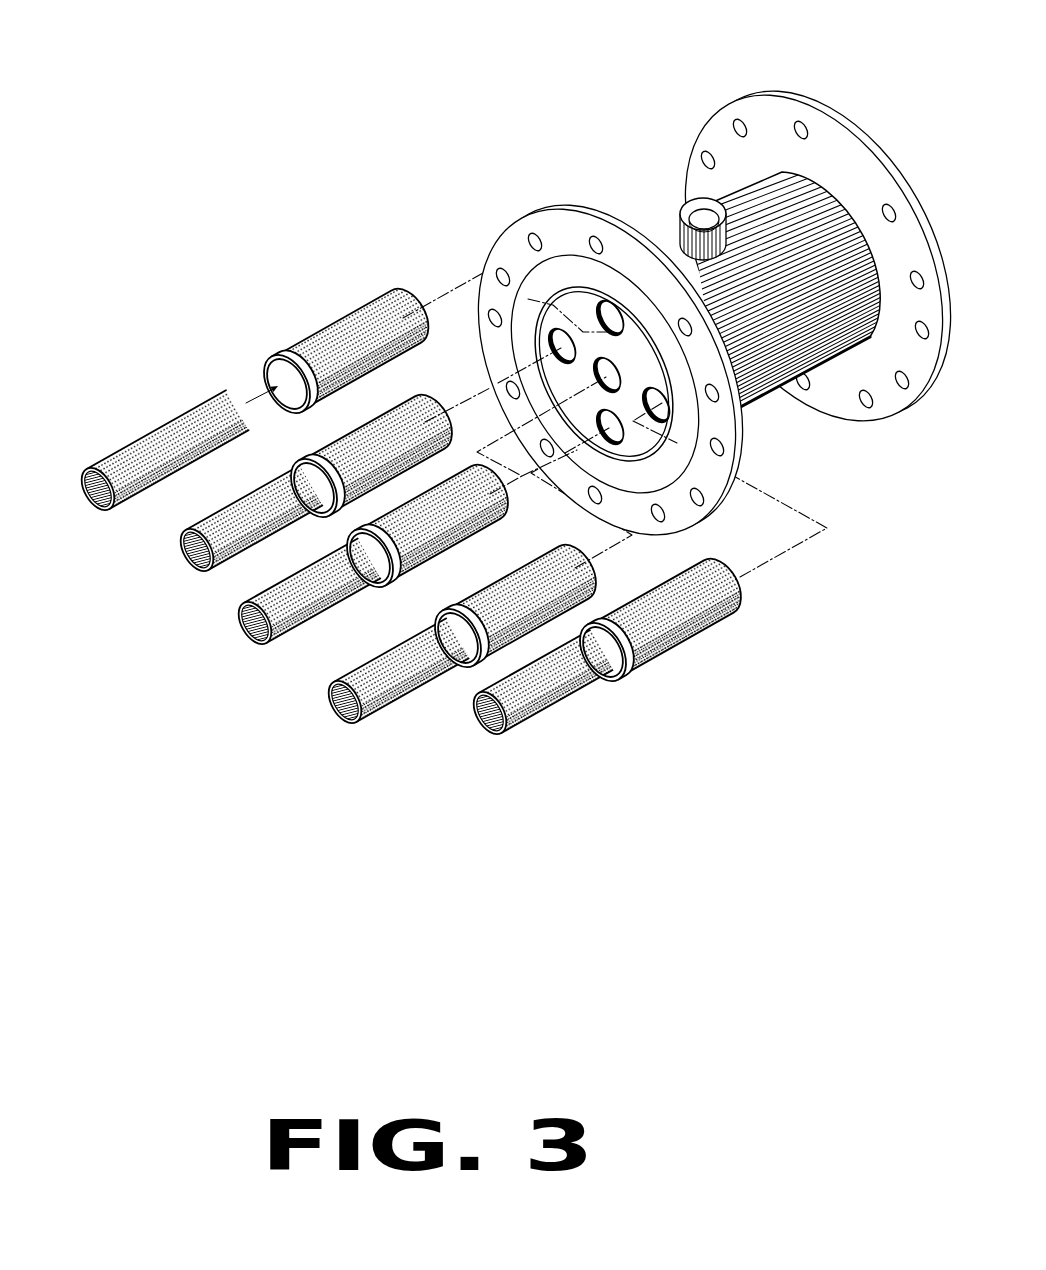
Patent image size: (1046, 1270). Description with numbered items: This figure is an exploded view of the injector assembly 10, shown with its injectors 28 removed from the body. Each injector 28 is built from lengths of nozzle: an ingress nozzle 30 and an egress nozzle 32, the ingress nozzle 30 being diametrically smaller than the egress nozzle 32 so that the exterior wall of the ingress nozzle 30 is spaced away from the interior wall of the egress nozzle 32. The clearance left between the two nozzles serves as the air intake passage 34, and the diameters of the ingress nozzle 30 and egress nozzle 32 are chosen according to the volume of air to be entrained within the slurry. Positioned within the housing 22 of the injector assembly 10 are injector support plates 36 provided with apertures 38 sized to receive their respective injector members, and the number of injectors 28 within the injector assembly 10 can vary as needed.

The injector assembly 10 is at (382, 128).
The housing 22 is at (767, 397).
The injectors 28 is at (414, 282).
The ingress nozzle 30 is at (183, 478).
The egress nozzle 32 is at (362, 380).
The air intake passage 34 is at (609, 676).
The injector support plates 36 is at (570, 302).
The apertures 38 is at (662, 415).